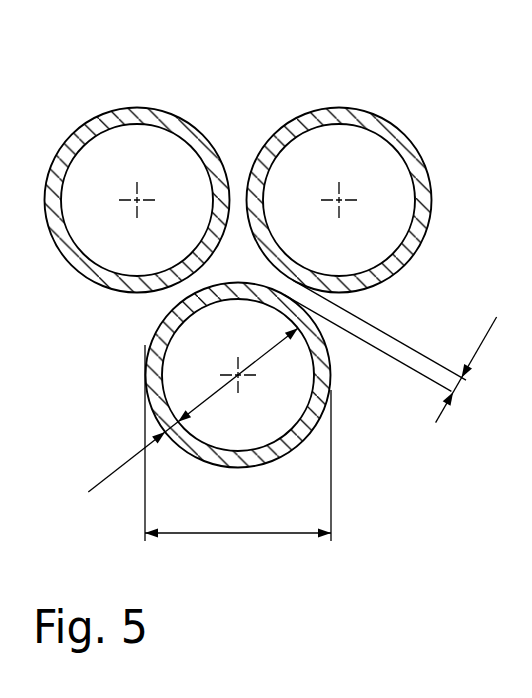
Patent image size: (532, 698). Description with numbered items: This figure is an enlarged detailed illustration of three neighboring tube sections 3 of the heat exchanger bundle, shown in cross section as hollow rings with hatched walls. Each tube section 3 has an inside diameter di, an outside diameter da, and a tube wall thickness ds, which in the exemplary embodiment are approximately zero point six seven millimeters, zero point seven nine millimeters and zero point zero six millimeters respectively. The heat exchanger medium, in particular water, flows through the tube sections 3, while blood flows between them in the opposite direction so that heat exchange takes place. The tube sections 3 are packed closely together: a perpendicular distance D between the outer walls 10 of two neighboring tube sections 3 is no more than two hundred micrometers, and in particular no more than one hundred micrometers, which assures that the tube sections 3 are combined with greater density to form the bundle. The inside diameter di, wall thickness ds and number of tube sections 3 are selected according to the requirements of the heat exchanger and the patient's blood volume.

The tube section 3 is at (125, 142).
The outer wall 10 is at (285, 125).
The inside diameter di is at (238, 375).
The tube wall thickness ds is at (132, 452).
The outside diameter da is at (238, 443).
The perpendicular distance D is at (390, 351).